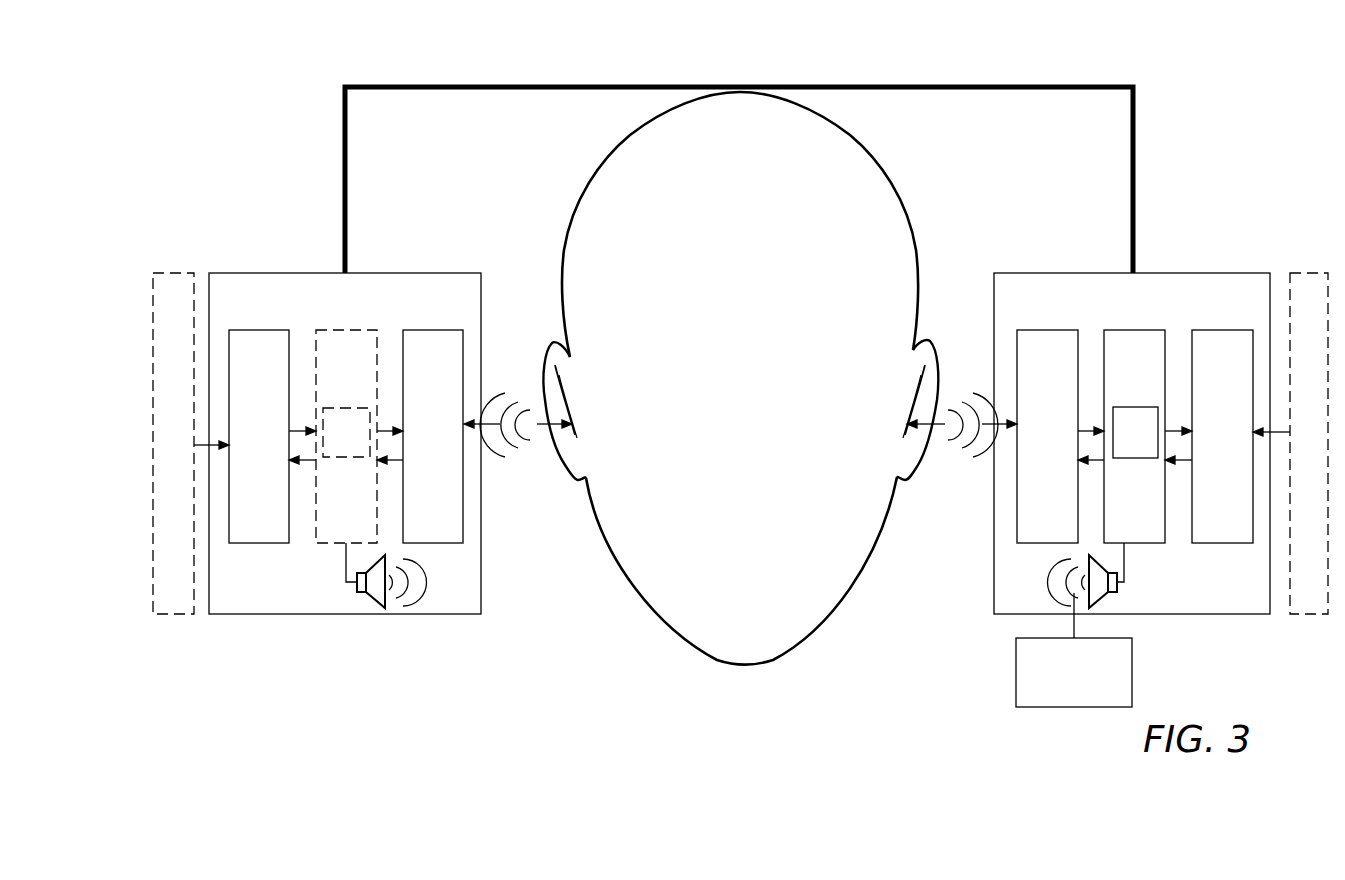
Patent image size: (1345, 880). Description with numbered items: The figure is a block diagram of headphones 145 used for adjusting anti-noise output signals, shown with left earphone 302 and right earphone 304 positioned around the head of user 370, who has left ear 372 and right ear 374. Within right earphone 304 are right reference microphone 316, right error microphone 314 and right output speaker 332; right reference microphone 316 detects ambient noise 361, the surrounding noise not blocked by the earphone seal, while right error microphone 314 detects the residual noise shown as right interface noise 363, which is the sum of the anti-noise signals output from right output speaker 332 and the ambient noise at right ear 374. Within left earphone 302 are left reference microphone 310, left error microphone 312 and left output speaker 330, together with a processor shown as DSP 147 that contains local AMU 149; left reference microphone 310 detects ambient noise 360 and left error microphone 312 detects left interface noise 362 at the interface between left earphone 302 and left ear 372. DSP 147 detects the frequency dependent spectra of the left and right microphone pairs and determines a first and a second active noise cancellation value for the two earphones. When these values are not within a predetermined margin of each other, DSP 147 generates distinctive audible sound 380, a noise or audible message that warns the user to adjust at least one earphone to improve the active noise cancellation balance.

The headphones 145 is at (733, 84).
The user 370 is at (892, 175).
The right ear 374 is at (545, 353).
The left ear 372 is at (938, 353).
The right earphone 304 is at (345, 443).
The left earphone 302 is at (1132, 443).
The ambient noise 361 is at (191, 443).
The ambient noise 360 is at (1290, 443).
The right reference microphone 316 is at (259, 436).
The right error microphone 314 is at (433, 436).
The left error microphone 312 is at (1047, 436).
The left reference microphone 310 is at (1222, 436).
The DSP 147 is at (740, 436).
The local AMU 149 is at (740, 432).
The right output speaker 332 is at (350, 588).
The left output speaker 330 is at (1124, 588).
The right interface noise 363 is at (526, 462).
The left interface noise 362 is at (955, 462).
The distinctive audible sound 380 is at (1132, 677).